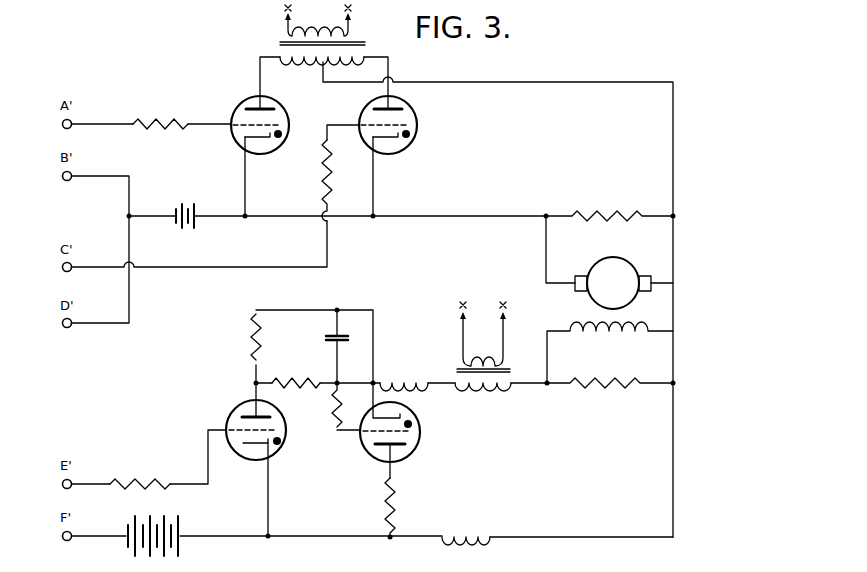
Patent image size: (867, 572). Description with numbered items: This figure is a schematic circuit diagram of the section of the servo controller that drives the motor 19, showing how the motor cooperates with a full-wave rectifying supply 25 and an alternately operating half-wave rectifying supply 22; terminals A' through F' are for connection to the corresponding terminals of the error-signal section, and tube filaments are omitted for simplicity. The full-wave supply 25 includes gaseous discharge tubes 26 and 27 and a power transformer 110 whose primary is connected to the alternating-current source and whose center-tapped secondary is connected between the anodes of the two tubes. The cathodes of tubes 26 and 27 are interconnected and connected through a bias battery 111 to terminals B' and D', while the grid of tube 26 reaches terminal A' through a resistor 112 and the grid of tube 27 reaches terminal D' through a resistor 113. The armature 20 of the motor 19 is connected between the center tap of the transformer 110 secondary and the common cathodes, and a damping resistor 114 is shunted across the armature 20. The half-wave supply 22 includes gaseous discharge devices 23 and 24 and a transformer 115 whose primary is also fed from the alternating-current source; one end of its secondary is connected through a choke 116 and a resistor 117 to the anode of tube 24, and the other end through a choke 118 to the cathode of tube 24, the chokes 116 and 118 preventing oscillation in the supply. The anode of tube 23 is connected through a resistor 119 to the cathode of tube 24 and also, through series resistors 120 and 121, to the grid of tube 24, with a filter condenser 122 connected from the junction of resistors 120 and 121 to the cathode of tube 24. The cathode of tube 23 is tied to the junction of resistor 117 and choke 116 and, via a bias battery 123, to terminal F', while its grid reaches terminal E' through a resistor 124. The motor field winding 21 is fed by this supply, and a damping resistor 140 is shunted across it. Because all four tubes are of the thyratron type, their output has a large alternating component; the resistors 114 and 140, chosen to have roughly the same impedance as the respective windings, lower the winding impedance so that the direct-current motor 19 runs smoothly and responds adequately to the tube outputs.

The motor 19 is at (635, 316).
The armature 20 is at (592, 265).
The field winding 21 is at (572, 321).
The half-wave rectifying supply 22 is at (355, 429).
The gaseous discharge tube 23 is at (272, 451).
The gaseous discharge tube 24 is at (410, 446).
The full-wave rectifying supply 25 is at (362, 271).
The gaseous discharge tube 26 is at (273, 148).
The gaseous discharge tube 27 is at (402, 148).
The power transformer 110 is at (355, 42).
The bias battery 111 is at (190, 203).
The resistor 112 is at (161, 119).
The resistor 113 is at (319, 184).
The damping resistor 114 is at (613, 212).
The transformer 115 is at (509, 366).
The choke 116 is at (486, 532).
The resistor 117 is at (382, 498).
The choke 118 is at (409, 370).
The resistor 119 is at (266, 336).
The resistor 120 is at (303, 372).
The resistor 121 is at (330, 405).
The filter condenser 122 is at (347, 339).
The bias battery 123 is at (180, 531).
The resistor 124 is at (159, 478).
The damping resistor 140 is at (629, 393).